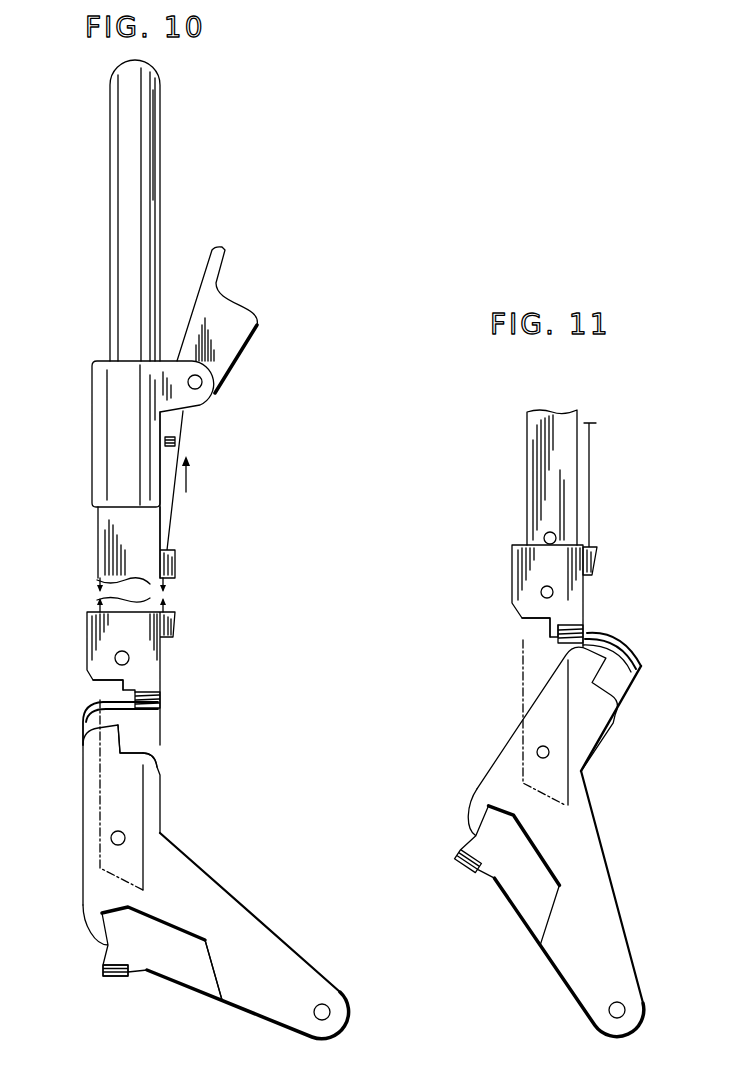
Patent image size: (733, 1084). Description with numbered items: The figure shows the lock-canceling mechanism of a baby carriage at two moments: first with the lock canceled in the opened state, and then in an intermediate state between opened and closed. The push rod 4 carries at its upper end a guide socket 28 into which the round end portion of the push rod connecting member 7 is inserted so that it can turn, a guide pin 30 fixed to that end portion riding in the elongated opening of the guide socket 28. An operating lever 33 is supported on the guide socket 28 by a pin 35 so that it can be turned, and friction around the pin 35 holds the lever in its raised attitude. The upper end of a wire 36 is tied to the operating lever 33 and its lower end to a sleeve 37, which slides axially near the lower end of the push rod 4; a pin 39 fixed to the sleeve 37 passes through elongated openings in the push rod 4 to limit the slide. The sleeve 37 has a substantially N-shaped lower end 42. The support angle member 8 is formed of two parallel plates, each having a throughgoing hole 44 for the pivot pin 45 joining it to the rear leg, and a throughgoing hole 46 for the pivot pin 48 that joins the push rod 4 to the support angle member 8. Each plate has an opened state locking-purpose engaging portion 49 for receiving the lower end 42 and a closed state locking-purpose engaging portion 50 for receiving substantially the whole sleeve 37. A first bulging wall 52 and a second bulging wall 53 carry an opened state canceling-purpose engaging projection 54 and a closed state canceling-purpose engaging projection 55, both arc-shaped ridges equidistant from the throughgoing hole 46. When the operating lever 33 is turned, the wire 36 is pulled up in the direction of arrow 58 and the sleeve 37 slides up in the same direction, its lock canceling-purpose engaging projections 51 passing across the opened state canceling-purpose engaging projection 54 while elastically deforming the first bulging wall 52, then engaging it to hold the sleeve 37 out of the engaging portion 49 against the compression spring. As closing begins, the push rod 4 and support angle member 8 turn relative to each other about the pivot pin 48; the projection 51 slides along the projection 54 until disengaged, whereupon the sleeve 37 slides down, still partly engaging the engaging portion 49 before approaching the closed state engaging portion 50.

In FIG. 10, the push rod 4 is at (97, 583).
In FIG. 11, the push rod 4 is at (527, 482).
In FIG. 10, the push rod connecting member 7 is at (163, 142).
In FIG. 10, the support angle member 8 is at (240, 896).
In FIG. 11, the support angle member 8 is at (608, 878).
In FIG. 10, the guide socket 28 is at (98, 430).
In FIG. 10, the guide pin 30 is at (176, 442).
In FIG. 10, the operating lever 33 is at (217, 250).
In FIG. 10, the pin 35 is at (203, 383).
In FIG. 10, the wire 36 is at (168, 542).
In FIG. 11, the wire 36 is at (590, 506).
In FIG. 10, the sleeve 37 is at (83, 656).
In FIG. 11, the sleeve 37 is at (508, 573).
In FIG. 10, the pin 39 is at (129, 657).
In FIG. 11, the pin 39 is at (541, 594).
In FIG. 10, the lower end 42 is at (118, 690).
In FIG. 11, the lower end 42 is at (548, 620).
In FIG. 10, the throughgoing hole 44 is at (331, 1012).
In FIG. 11, the throughgoing hole 44 is at (624, 1002).
In FIG. 10, the pivot pin 45 is at (381, 1013).
In FIG. 11, the pivot pin 45 is at (670, 995).
In FIG. 10, the throughgoing hole 46 is at (126, 838).
In FIG. 11, the throughgoing hole 46 is at (549, 751).
In FIG. 10, the pivot pin 48 is at (201, 824).
In FIG. 11, the pivot pin 48 is at (621, 752).
In FIG. 10, the opened state locking-purpose engaging portion 49 is at (113, 742).
In FIG. 11, the opened state locking-purpose engaging portion 49 is at (610, 682).
In FIG. 10, the closed state locking-purpose engaging portion 50 is at (208, 960).
In FIG. 11, the closed state locking-purpose engaging portion 50 is at (540, 870).
In FIG. 10, the lock canceling-purpose engaging projection 51 is at (160, 692).
In FIG. 11, the lock canceling-purpose engaging projection 51 is at (572, 625).
In FIG. 10, the first bulging wall 52 is at (157, 753).
In FIG. 11, the first bulging wall 52 is at (628, 673).
In FIG. 10, the second bulging wall 53 is at (162, 968).
In FIG. 11, the second bulging wall 53 is at (533, 912).
In FIG. 10, the opened state canceling-purpose engaging projection 54 is at (140, 709).
In FIG. 11, the opened state canceling-purpose engaging projection 54 is at (632, 648).
In FIG. 10, the closed state canceling-purpose engaging projection 55 is at (104, 976).
In FIG. 11, the closed state canceling-purpose engaging projection 55 is at (471, 864).
In FIG. 10, the arrow 58 is at (192, 476).